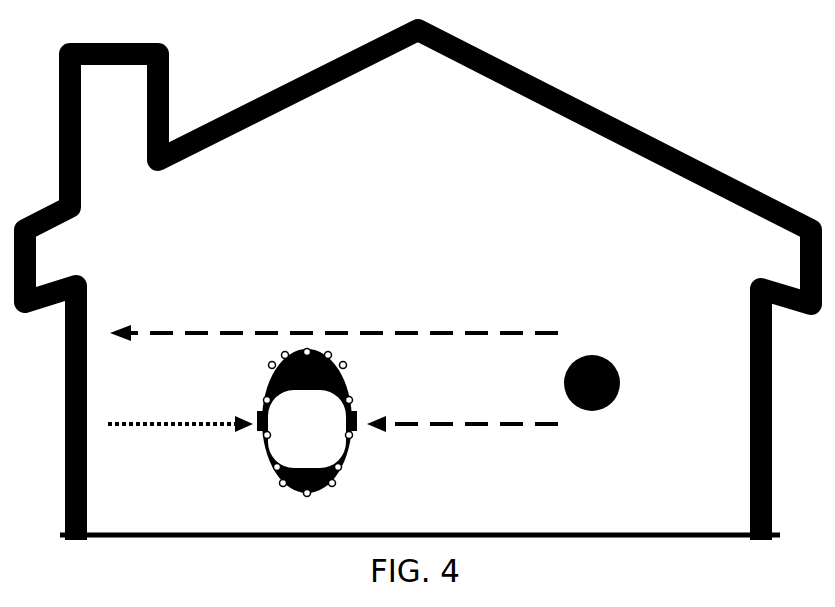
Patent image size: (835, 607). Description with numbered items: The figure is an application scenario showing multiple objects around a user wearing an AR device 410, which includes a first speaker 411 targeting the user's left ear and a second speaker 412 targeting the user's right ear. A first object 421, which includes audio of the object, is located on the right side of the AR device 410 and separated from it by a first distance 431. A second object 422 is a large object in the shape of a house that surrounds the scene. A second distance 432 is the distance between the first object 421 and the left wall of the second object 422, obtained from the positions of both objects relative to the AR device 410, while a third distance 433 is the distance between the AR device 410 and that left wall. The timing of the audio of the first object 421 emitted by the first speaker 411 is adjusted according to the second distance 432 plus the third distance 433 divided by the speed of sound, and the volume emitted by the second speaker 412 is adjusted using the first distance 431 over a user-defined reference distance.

The AR device 410 is at (325, 490).
The first speaker 411 is at (259, 417).
The second speaker 412 is at (356, 417).
The first object 421 is at (617, 365).
The second object 422 is at (708, 167).
The first distance 431 is at (462, 412).
The second distance 432 is at (334, 323).
The third distance 433 is at (180, 413).